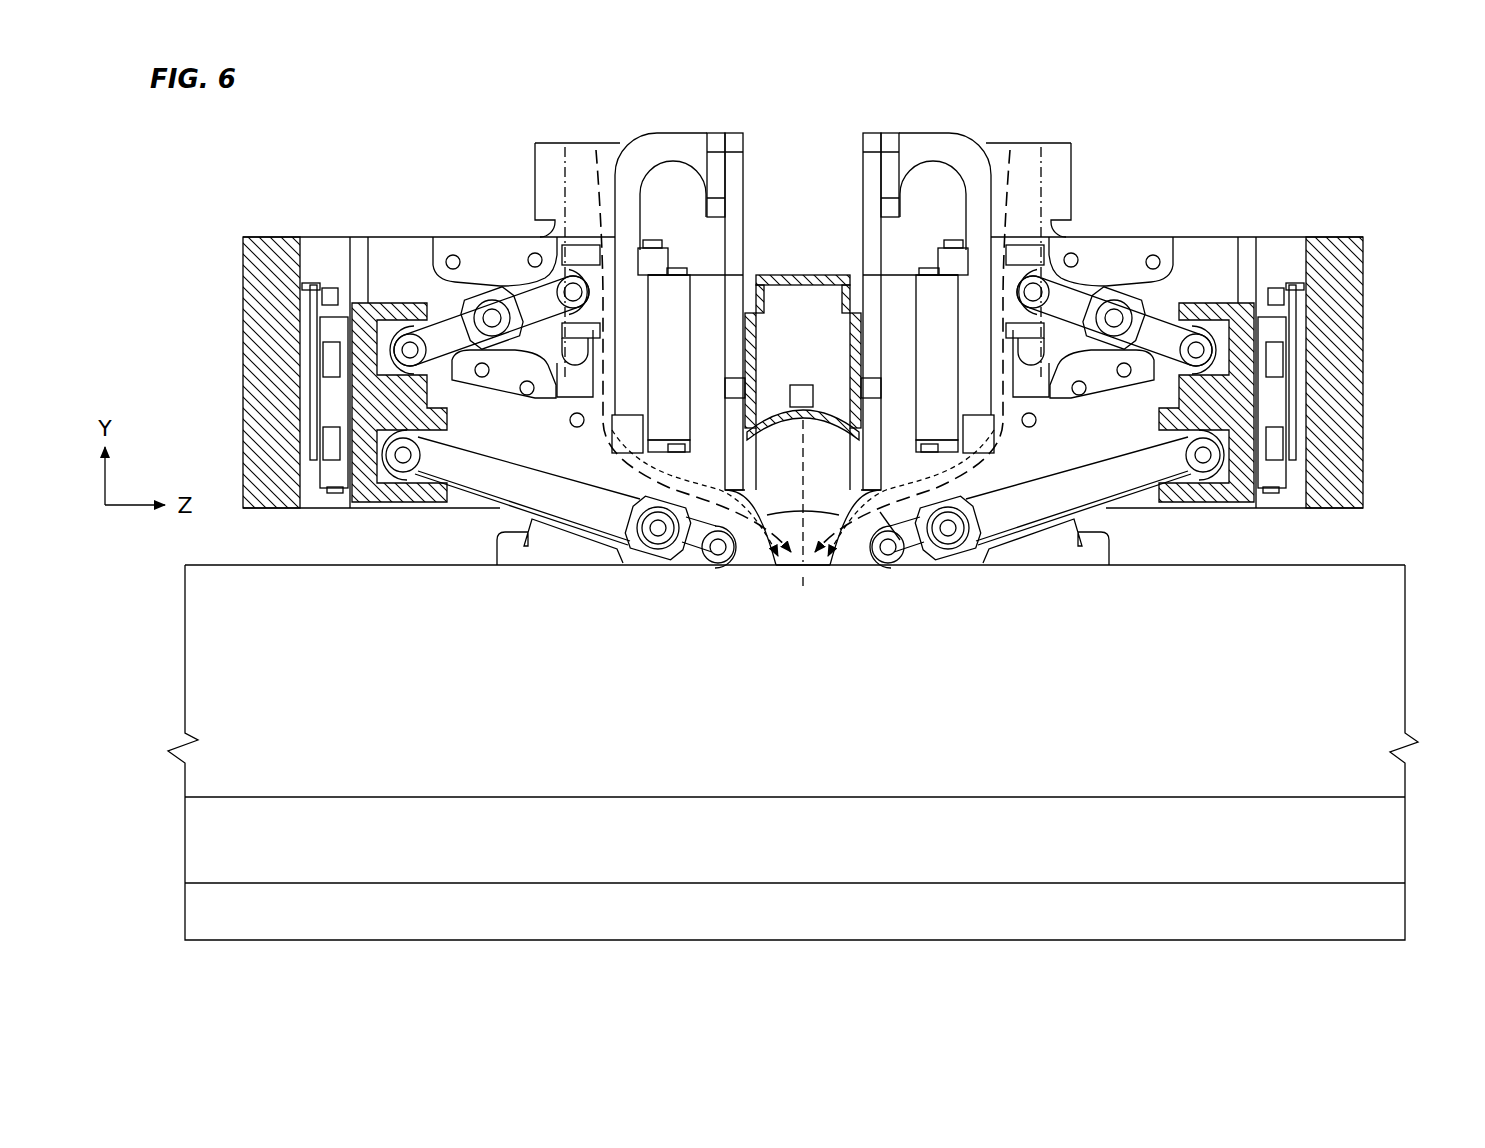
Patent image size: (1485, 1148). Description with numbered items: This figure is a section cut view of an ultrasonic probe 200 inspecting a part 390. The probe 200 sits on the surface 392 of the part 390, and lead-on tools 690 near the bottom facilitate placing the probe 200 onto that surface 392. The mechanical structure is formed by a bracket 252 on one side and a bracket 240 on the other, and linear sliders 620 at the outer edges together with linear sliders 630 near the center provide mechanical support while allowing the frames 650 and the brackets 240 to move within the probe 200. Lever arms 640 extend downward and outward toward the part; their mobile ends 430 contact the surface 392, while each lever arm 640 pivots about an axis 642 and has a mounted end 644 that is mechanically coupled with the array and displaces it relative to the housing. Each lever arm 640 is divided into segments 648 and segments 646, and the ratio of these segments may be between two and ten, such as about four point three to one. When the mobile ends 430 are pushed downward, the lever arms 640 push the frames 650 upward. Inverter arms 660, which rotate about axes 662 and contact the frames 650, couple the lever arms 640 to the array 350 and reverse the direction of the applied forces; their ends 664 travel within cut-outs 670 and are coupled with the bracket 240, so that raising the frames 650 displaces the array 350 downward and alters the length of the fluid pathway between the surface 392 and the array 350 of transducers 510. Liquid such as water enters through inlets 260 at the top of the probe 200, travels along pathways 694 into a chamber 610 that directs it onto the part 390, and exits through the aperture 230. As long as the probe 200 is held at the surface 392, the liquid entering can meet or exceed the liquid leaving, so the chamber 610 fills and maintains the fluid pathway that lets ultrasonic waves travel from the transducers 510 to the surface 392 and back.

The ultrasonic probe 200 is at (1260, 110).
The aperture 230 is at (803, 580).
The bracket 240 is at (920, 133).
The bracket 252 is at (687, 133).
The inlets 260 is at (588, 141).
The array 350 is at (801, 273).
The part 390 is at (1406, 642).
The surface 392 is at (1271, 562).
The mobile ends 430 is at (723, 556).
The transducers 510 is at (802, 384).
The chamber 610 is at (767, 567).
The linear sliders 620 is at (296, 364).
The linear sliders 630 is at (689, 345).
The lever arms 640 is at (518, 478).
The axis 642 is at (657, 531).
The mounted end 644 is at (405, 462).
The segments 646 is at (975, 590).
The segments 648 is at (1210, 507).
The frames 650 is at (380, 300).
The inverter arms 660 is at (440, 332).
The axes 662 is at (492, 316).
The ends 664 is at (571, 294).
The cut-outs 670 is at (548, 417).
The lead-on tools 690 is at (490, 560).
The pathways 694 is at (605, 228).